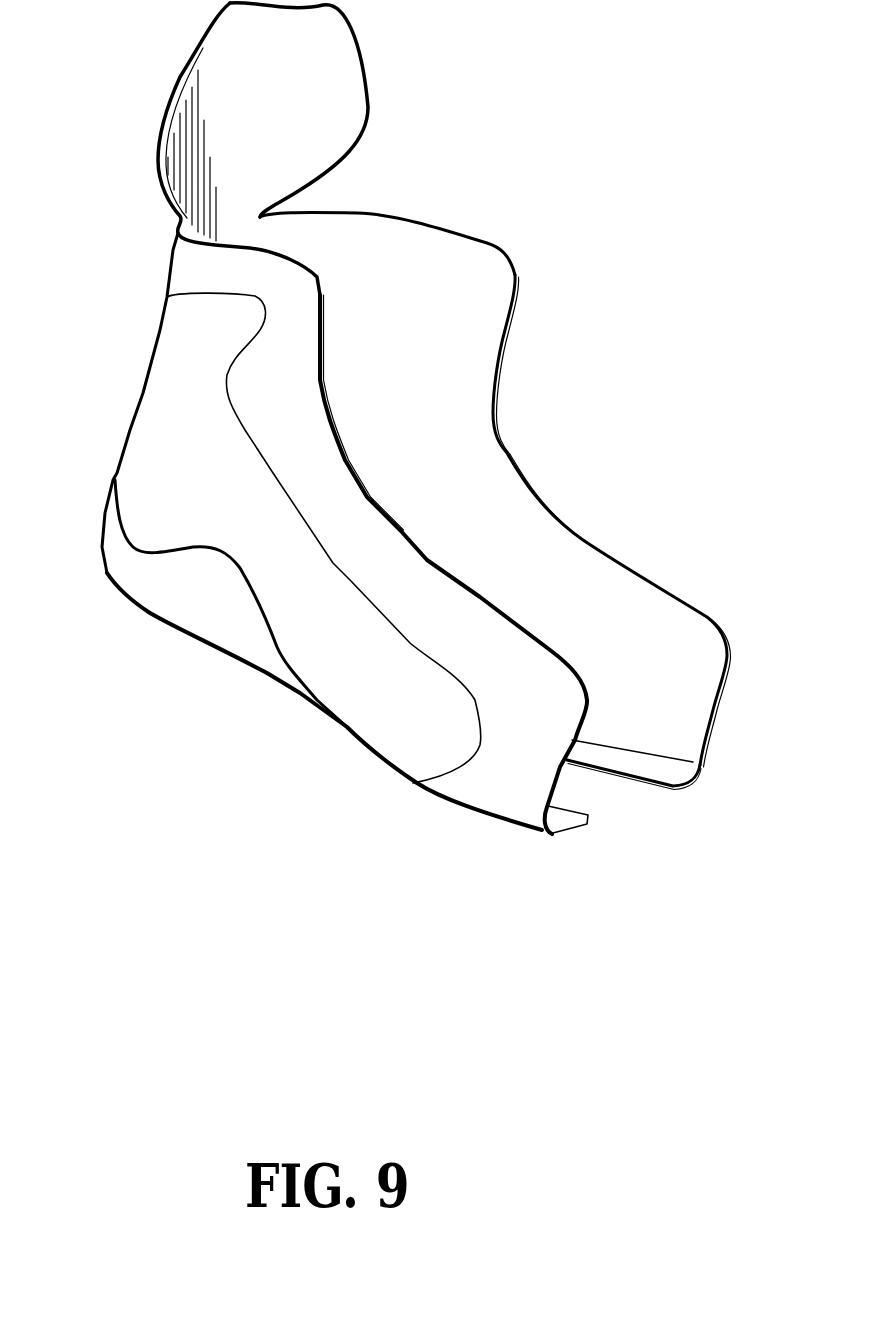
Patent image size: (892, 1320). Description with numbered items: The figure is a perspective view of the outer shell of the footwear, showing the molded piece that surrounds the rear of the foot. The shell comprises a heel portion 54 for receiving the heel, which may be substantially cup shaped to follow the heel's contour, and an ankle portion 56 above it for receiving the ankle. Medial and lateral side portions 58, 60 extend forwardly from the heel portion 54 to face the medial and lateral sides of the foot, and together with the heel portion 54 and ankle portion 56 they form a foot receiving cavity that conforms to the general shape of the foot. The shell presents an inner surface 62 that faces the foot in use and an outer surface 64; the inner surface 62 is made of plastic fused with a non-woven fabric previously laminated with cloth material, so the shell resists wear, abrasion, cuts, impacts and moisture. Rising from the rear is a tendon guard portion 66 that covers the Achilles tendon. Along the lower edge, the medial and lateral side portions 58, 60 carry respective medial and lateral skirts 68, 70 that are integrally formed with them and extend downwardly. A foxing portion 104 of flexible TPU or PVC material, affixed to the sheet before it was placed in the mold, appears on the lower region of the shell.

The heel portion 54 is at (110, 573).
The ankle portion 56 is at (180, 390).
The medial side portion 58 is at (583, 540).
The lateral side portion 60 is at (360, 675).
The inner surface 62 is at (413, 392).
The outer surface 64 is at (227, 496).
The tendon guard portion 66 is at (205, 41).
The medial skirt 68 is at (683, 770).
The lateral skirt 70 is at (563, 817).
The foxing portion 104 is at (187, 608).